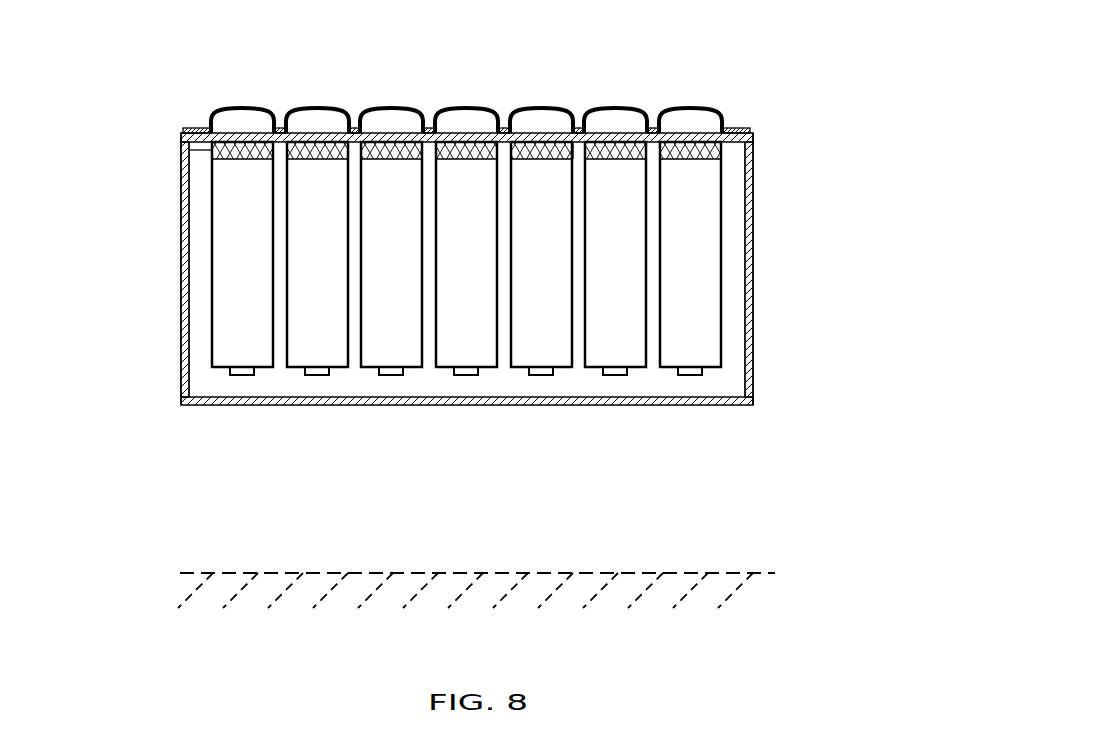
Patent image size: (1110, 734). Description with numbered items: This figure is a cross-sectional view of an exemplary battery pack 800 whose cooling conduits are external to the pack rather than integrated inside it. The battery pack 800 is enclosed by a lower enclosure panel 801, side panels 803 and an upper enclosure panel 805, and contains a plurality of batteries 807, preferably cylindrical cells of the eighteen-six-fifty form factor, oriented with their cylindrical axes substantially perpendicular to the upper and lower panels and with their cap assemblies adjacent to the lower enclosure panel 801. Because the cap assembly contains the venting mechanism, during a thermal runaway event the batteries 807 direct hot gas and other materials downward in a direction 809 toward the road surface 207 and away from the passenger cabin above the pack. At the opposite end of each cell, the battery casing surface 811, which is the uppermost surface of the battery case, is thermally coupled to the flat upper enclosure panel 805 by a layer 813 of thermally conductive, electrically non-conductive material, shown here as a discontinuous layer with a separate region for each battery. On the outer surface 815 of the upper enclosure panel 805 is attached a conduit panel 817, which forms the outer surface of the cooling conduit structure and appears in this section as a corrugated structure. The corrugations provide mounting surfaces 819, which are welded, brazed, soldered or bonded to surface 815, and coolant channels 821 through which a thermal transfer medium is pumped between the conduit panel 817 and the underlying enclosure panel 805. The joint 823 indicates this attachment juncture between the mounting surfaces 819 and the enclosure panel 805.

The battery pack 800 is at (740, 70).
The lower enclosure panel 801 is at (496, 405).
The side panels 803 is at (181, 322).
The upper enclosure panel 805 is at (727, 142).
The batteries 807 is at (219, 280).
The direction 809 is at (338, 378).
The battery casing surface 811 is at (233, 163).
The layer 813 is at (189, 150).
The surface 815 is at (186, 130).
The conduit panel 817 is at (212, 127).
The mounting surfaces 819 is at (353, 120).
The coolant channels 821 is at (537, 102).
The joint 823 is at (575, 143).
The road surface 207 is at (453, 570).